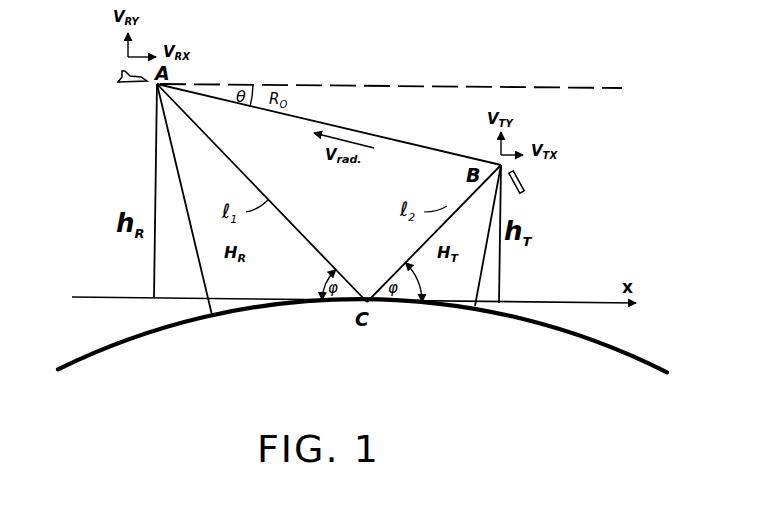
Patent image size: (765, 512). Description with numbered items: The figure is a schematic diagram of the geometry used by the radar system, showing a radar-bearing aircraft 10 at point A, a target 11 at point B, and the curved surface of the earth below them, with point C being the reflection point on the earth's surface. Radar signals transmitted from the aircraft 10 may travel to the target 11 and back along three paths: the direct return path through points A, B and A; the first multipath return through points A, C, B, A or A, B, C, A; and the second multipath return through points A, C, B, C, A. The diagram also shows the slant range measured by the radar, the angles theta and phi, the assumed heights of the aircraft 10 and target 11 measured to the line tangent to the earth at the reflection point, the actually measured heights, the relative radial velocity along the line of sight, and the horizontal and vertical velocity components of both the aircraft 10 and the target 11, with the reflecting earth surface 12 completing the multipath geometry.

The radar-bearing aircraft 10 is at (118, 84).
The target 11 is at (525, 183).
The reflecting earth surface 12 is at (370, 304).